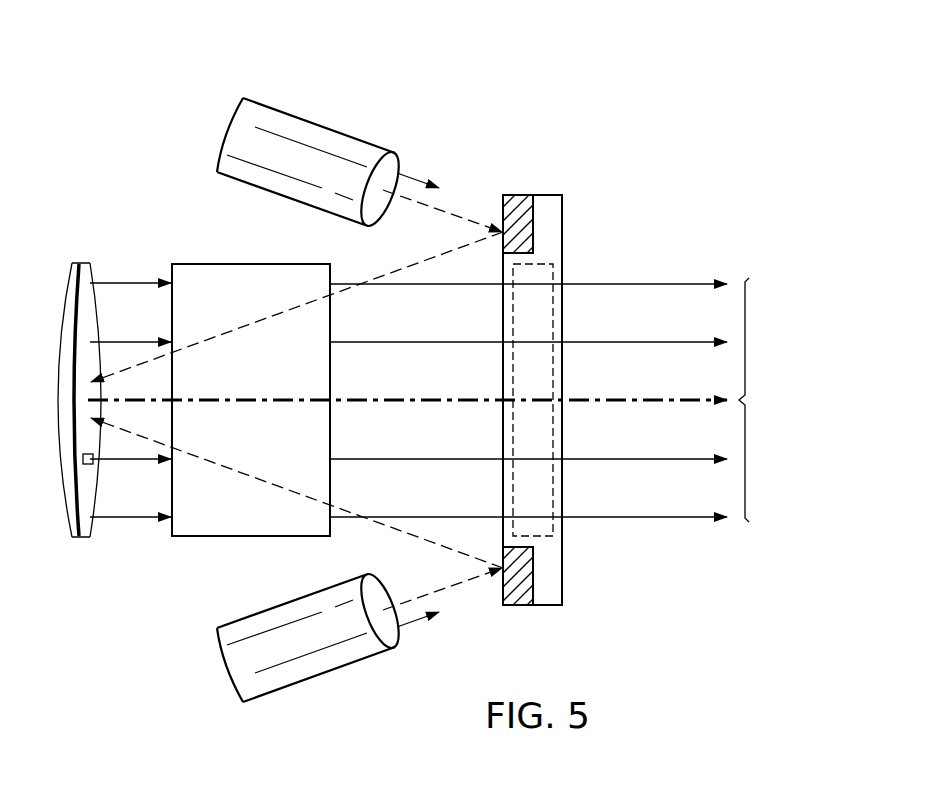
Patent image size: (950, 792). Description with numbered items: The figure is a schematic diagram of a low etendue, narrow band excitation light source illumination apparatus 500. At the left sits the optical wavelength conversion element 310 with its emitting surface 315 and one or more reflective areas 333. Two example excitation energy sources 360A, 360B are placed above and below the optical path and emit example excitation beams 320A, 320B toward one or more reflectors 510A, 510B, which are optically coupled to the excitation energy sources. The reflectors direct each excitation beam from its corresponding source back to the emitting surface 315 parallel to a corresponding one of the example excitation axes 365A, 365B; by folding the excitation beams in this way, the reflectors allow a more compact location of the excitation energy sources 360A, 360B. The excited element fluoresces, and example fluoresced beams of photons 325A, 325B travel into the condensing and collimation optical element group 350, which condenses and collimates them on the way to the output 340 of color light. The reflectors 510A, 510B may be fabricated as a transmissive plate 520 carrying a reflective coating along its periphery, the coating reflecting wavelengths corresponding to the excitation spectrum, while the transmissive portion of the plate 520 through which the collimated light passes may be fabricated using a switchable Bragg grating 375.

The excitation illumination apparatus 500 is at (593, 62).
The optical wavelength conversion element 310 is at (80, 263).
The emitting surface 315 is at (90, 488).
The reflective areas 333 is at (87, 467).
The fluoresced beam of photons 325A is at (138, 282).
The fluoresced beam of photons 325B is at (148, 341).
The condensing and collimation optical element group 350 is at (202, 264).
The output 340 is at (457, 400).
The transmissive plate 520 is at (563, 220).
The reflector 510A is at (516, 200).
The reflector 510B is at (525, 597).
The switchable Bragg grating 375 is at (555, 415).
The excitation energy source 360A is at (337, 104).
The excitation energy source 360B is at (322, 676).
The excitation beam 320A is at (433, 160).
The excitation beam 320B is at (417, 620).
The excitation axis 365A is at (437, 256).
The excitation axis 365B is at (433, 542).